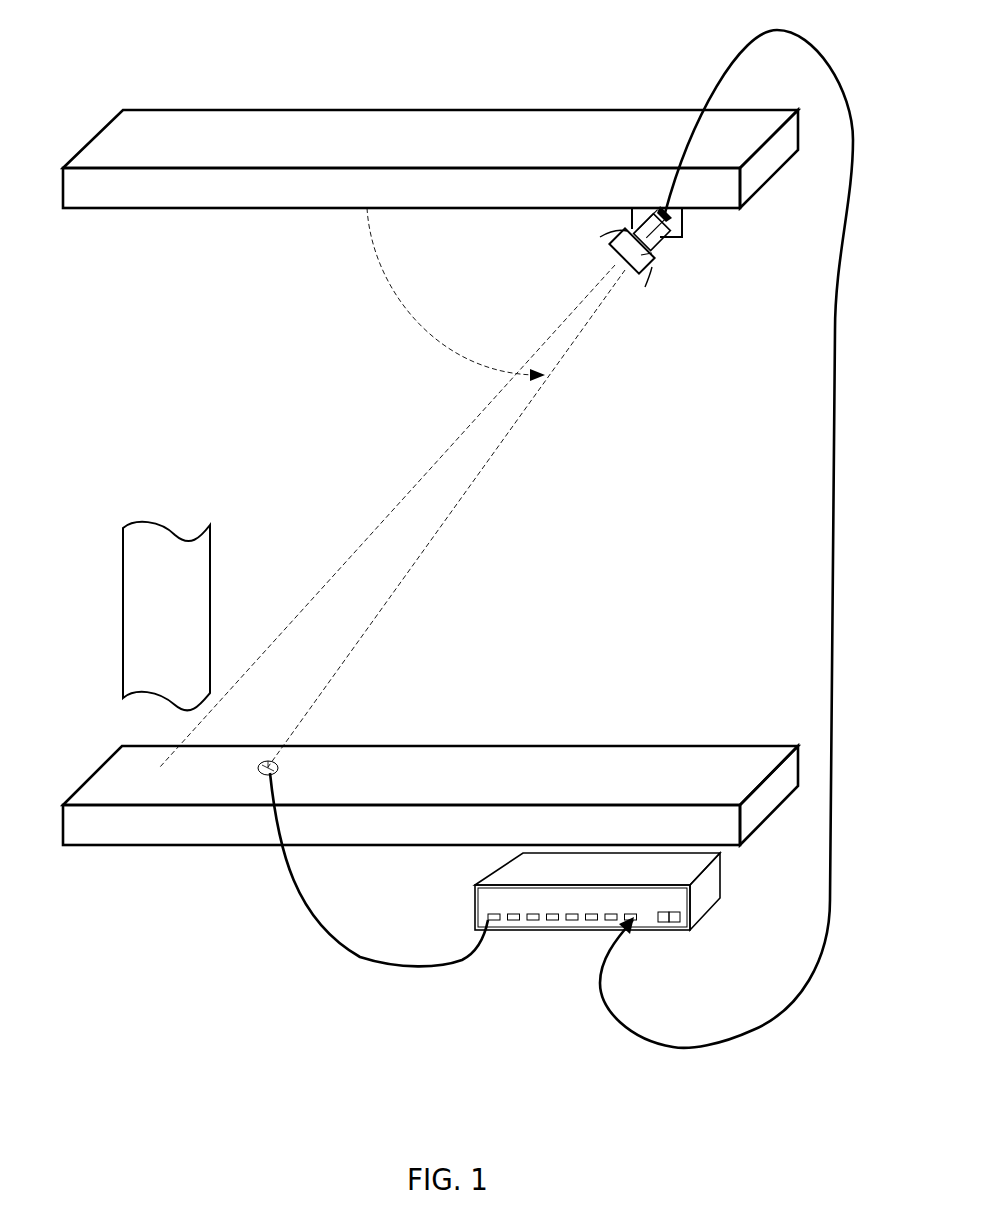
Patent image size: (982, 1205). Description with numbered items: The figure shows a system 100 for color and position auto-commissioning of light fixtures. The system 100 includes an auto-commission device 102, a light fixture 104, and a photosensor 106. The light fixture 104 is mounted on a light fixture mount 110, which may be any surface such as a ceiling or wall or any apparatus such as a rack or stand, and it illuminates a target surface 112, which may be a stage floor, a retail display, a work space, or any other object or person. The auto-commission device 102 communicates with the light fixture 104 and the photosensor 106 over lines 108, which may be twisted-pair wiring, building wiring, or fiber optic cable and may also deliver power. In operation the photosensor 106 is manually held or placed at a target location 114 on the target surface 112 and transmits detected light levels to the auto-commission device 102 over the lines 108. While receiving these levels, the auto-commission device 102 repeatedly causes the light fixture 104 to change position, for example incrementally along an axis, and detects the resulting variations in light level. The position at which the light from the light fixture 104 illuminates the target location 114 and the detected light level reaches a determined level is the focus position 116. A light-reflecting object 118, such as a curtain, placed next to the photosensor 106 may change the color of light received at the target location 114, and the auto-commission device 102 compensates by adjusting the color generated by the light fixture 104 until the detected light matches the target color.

The system 100 is at (235, 986).
The auto-commission device 102 is at (695, 890).
The light fixture 104 is at (645, 258).
The photosensor 106 is at (287, 770).
The lines 108 is at (596, 967).
The light fixture mount 110 is at (334, 205).
The target surface 112 is at (493, 745).
The target location 114 is at (252, 783).
The focus position 116 is at (377, 328).
The light-reflecting object 118 is at (272, 537).